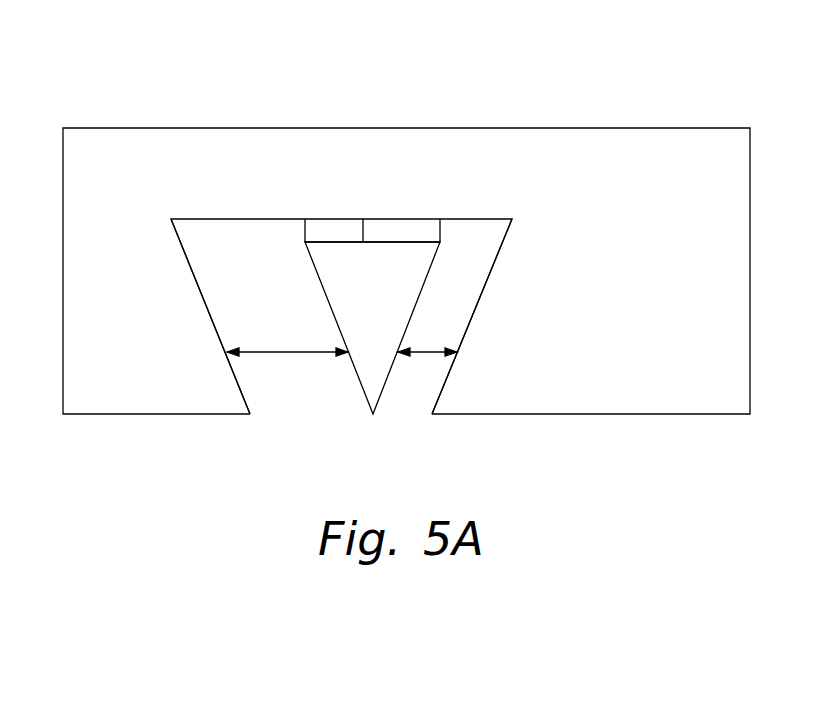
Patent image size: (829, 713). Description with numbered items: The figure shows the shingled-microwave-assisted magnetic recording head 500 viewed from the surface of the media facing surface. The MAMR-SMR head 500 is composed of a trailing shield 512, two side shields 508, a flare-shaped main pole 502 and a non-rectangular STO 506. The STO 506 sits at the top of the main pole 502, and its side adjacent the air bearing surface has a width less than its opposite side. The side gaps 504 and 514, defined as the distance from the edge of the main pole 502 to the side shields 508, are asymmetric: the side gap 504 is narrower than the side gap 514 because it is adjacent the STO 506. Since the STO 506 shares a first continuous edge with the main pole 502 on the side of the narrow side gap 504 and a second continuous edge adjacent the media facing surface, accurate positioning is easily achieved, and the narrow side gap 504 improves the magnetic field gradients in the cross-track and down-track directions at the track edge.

The shingled-microwave-assisted magnetic recording head 500 is at (160, 41).
The flare-shaped main pole 502 is at (323, 268).
The side gap 504 is at (420, 355).
The non-rectangular STO 506 is at (425, 234).
The side shields 508 is at (203, 319).
The trailing shield 512 is at (95, 140).
The side gap 514 is at (287, 353).